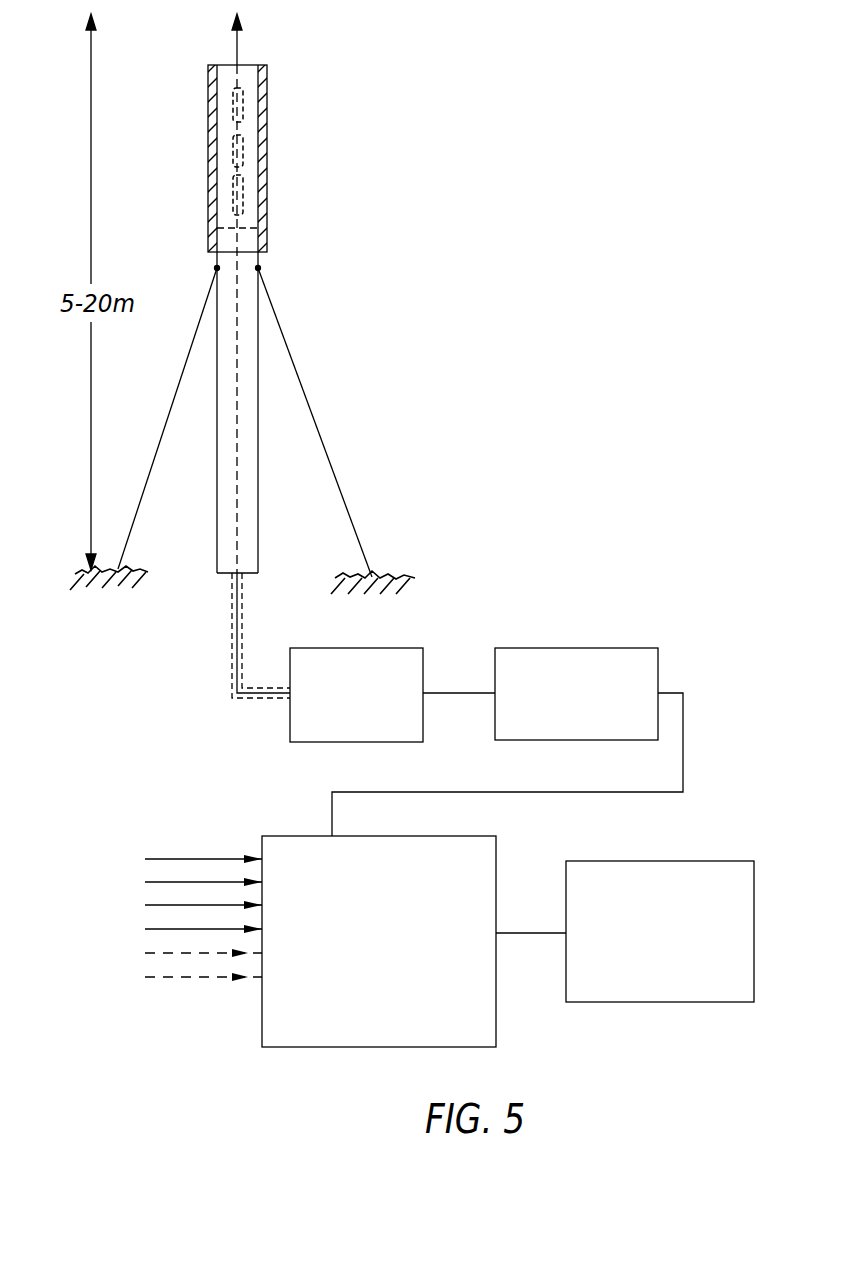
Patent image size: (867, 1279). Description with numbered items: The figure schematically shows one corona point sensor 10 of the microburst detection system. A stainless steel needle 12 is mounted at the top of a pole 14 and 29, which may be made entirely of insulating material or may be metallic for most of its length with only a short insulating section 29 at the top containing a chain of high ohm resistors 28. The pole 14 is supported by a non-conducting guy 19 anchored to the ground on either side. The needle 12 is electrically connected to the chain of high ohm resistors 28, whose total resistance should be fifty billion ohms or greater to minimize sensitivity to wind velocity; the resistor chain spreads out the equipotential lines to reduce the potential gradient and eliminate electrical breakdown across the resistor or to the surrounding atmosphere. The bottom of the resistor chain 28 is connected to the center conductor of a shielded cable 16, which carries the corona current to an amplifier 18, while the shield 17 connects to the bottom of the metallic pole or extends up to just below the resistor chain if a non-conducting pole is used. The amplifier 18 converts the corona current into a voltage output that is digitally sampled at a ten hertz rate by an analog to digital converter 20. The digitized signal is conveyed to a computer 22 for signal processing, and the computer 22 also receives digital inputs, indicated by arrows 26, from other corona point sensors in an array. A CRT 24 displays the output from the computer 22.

The corona point sensor 10 is at (379, 235).
The stainless steel needle 12 is at (237, 46).
The pole 14 is at (259, 437).
The shielded cable 16 is at (237, 630).
The shield 17 is at (244, 613).
The amplifier 18 is at (407, 648).
The non-conducting guy 19 is at (293, 357).
The analog to digital converter 20 is at (633, 648).
The computer 22 is at (308, 835).
The CRT 24 is at (700, 861).
The arrows 26 is at (194, 857).
The chain of high ohm resistors 28 is at (243, 153).
The pole 29 is at (267, 187).